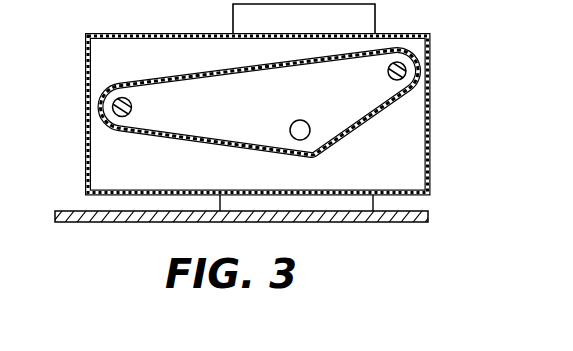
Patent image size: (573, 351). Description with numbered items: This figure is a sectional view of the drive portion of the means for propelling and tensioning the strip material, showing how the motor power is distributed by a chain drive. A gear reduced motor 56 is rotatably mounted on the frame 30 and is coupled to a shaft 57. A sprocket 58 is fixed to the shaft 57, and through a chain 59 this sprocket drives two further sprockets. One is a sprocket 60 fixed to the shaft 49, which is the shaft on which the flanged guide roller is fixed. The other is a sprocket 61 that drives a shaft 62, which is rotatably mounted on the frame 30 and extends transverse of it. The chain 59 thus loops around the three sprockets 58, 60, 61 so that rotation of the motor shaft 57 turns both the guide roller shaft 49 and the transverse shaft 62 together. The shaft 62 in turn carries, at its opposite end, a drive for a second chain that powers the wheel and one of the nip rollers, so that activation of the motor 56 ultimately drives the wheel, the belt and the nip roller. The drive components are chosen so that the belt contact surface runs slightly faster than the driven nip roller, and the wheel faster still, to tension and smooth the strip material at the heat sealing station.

The frame 30 is at (88, 222).
The shaft 49 is at (404, 72).
The gear reduced motor 56 is at (376, 14).
The shaft 57 is at (295, 125).
The sprocket 58 is at (300, 115).
The chain 59 is at (363, 119).
The sprocket 60 is at (422, 65).
The sprocket 61 is at (143, 87).
The shaft 62 is at (124, 98).